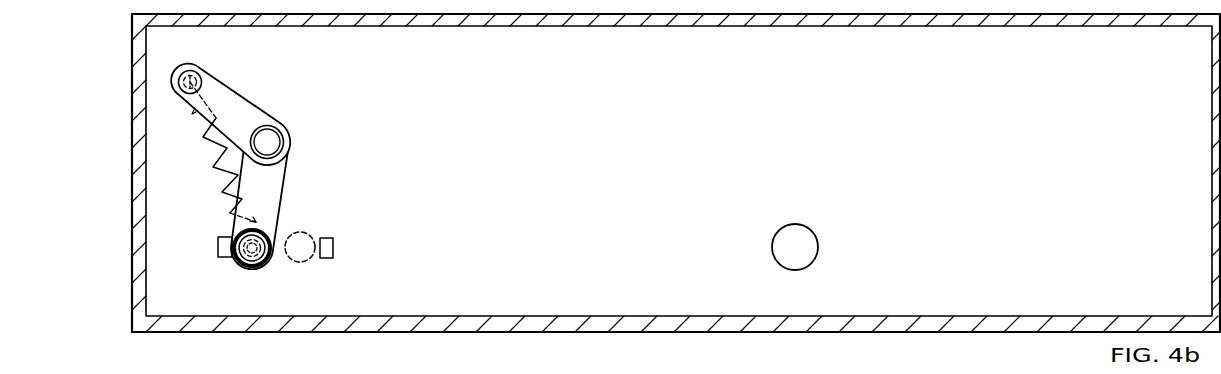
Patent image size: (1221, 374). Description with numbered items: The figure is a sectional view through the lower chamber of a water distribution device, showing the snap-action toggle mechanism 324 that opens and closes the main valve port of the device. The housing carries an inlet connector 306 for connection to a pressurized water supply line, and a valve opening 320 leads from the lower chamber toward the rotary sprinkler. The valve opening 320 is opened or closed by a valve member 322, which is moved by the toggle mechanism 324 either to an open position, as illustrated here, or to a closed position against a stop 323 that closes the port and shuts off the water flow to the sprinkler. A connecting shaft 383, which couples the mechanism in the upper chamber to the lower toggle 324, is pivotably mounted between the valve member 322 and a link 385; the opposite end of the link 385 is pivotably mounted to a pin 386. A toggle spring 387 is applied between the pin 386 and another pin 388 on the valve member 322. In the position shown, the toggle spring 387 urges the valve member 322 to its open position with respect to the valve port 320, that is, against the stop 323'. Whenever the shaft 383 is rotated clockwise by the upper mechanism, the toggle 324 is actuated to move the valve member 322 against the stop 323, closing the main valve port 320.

The inlet connector 306 is at (785, 259).
The valve opening 320 is at (302, 262).
The valve member 322 is at (283, 203).
The stop 323 is at (352, 246).
The stop 323' is at (202, 245).
The snap-action toggle mechanism 324 is at (282, 153).
The connecting shaft 383 is at (279, 124).
The link 385 is at (244, 101).
The pin 386 is at (193, 76).
The toggle spring 387 is at (225, 172).
The pin 388 is at (247, 268).